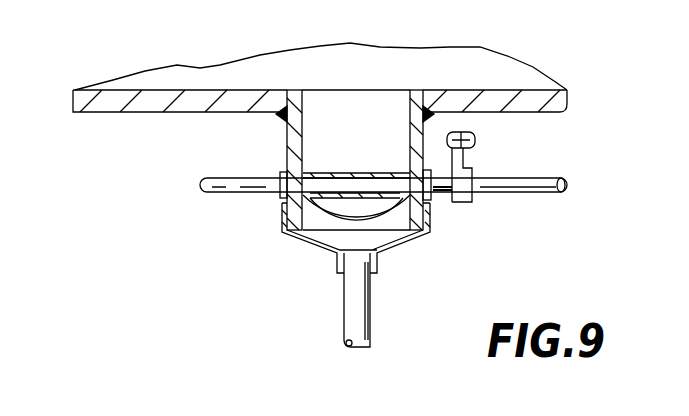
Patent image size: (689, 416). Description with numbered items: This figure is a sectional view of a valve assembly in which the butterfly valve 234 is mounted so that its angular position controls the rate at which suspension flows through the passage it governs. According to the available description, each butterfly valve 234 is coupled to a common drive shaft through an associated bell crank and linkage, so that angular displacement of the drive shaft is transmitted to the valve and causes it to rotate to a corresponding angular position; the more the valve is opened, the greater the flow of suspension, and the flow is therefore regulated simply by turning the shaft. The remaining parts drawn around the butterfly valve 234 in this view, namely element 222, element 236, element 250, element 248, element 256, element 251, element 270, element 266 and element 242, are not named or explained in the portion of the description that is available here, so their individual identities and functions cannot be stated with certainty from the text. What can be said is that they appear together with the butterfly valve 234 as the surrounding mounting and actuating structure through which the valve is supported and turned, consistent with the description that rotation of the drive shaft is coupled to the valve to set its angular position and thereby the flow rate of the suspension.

The plate 222 is at (228, 98).
The hub sleeve 236 is at (303, 107).
The ring 250 is at (317, 185).
The bearing member 248 is at (370, 190).
The rod 256 is at (525, 190).
The bushing 251 is at (281, 172).
The collar 270 is at (468, 203).
The set screw 266 is at (478, 143).
The butterfly valve 234 is at (350, 215).
The tube 242 is at (378, 262).